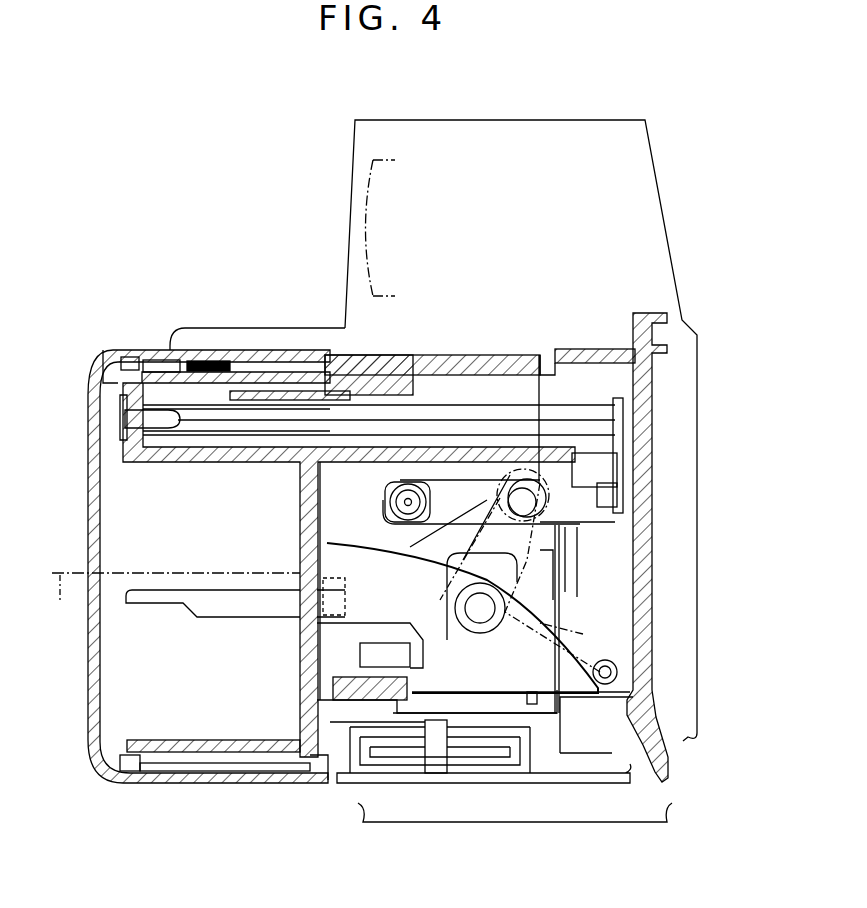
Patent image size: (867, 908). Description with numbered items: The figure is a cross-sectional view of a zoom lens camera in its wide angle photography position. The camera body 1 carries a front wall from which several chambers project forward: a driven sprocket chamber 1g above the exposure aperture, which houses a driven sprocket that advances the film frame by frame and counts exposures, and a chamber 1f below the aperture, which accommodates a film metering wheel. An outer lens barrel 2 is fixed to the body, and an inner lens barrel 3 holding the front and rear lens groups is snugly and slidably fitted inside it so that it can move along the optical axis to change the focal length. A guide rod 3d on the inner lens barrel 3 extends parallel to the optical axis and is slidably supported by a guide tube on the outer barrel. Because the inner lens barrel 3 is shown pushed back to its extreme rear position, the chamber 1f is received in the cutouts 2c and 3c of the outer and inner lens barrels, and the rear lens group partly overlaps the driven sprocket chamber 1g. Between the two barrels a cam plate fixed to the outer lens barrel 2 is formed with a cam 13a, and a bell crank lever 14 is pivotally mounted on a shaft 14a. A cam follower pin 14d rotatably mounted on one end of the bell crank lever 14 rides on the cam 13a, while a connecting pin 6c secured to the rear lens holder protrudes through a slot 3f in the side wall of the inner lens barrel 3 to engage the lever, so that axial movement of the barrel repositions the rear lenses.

The camera body 1 is at (703, 334).
The chamber 1f is at (592, 748).
The driven sprocket chamber 1g is at (543, 388).
The outer lens barrel 2 is at (463, 364).
The cutout 2c is at (548, 740).
The inner lens barrel 3 is at (436, 452).
The cutout 3c is at (540, 728).
The guide rod 3d is at (383, 415).
The slot 3f is at (390, 478).
The connecting pin 6c is at (570, 518).
The cam 13a is at (350, 548).
The bell crank lever 14 is at (583, 634).
The shaft 14a is at (478, 615).
The cam follower pin 14d is at (617, 672).